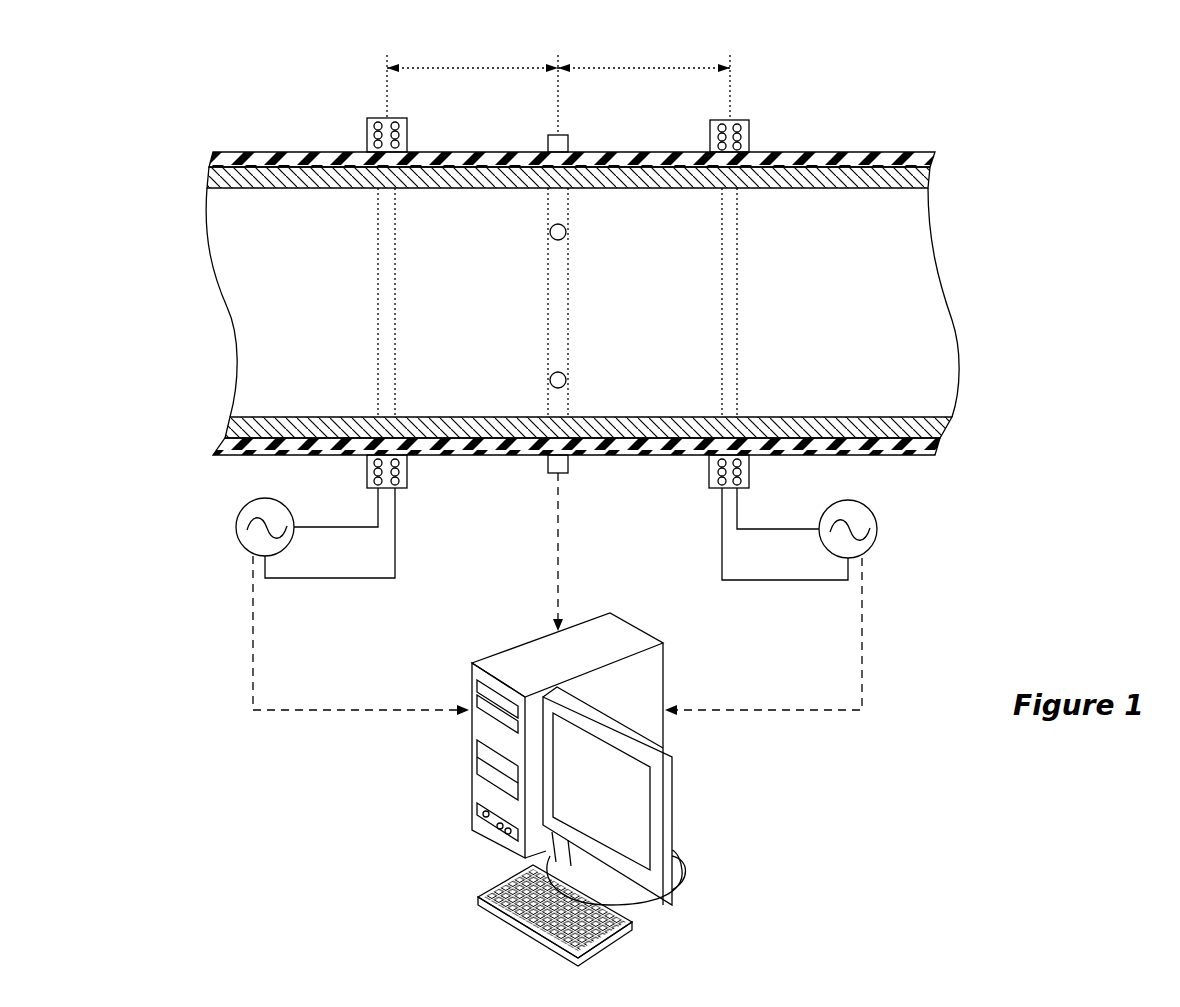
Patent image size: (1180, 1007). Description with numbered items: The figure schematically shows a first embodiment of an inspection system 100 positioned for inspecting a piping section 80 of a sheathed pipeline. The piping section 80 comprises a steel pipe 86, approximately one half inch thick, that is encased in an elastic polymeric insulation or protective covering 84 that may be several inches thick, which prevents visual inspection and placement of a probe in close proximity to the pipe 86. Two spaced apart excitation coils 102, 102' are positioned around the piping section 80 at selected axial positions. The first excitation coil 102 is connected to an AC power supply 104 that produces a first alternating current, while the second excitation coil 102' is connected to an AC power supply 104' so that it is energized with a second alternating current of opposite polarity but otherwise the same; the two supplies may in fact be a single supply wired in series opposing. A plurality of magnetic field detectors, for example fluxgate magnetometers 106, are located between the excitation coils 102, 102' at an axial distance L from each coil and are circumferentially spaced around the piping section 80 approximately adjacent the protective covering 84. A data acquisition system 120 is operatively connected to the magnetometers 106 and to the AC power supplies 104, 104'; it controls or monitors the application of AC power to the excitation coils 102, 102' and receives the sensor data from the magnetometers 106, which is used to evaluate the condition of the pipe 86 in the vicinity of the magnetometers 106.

The piping section 80 is at (635, 272).
The protective covering 84 is at (912, 151).
The pipe 86 is at (908, 190).
The inspection system 100 is at (858, 94).
The first excitation coil 102 is at (764, 286).
The second excitation coil 102' is at (346, 286).
The AC power supply 104 is at (818, 601).
The AC power supply 104' is at (308, 601).
The magnetometers 106 is at (548, 138).
The data acquisition system 120 is at (470, 788).